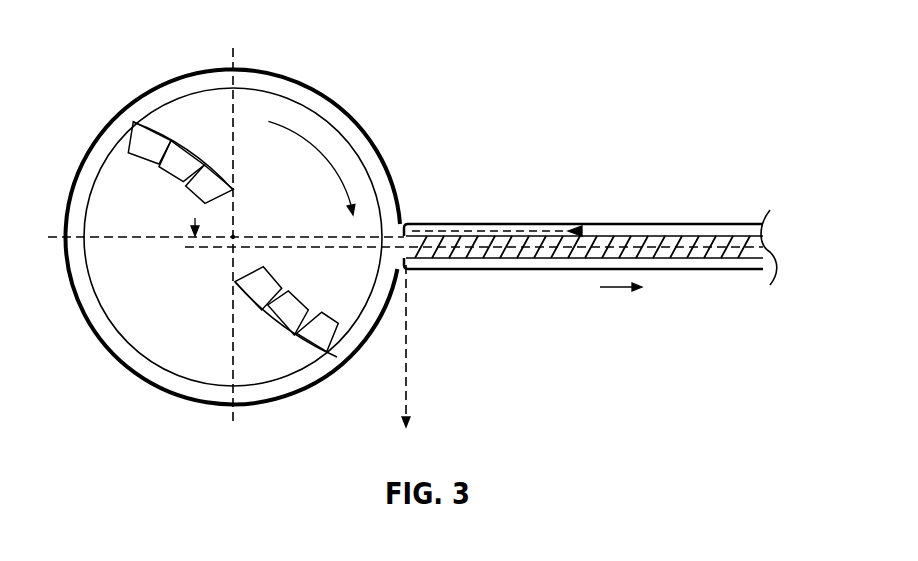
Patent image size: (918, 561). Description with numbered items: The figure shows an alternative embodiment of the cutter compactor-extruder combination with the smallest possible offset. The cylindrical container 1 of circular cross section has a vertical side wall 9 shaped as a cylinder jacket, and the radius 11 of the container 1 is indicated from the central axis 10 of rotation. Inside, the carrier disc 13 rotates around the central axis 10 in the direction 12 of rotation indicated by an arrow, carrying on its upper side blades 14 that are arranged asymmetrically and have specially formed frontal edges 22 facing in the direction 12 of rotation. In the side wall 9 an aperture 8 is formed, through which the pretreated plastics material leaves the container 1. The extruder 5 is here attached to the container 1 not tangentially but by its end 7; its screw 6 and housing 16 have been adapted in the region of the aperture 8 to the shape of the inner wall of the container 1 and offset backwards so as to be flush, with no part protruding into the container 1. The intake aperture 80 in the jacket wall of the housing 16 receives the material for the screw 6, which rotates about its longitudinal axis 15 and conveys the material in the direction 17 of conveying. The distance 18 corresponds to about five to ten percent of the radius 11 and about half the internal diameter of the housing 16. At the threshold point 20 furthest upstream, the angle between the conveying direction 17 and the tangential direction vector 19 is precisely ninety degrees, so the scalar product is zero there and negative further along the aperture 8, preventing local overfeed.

The container 1 is at (112, 50).
The extruder 5 is at (590, 243).
The screw 6 is at (685, 270).
The end of the extruder 7 is at (430, 226).
The aperture 8 is at (381, 256).
The side wall 9 is at (256, 68).
The central axis of rotation 10 is at (236, 236).
The radius of the container 11 is at (279, 235).
The direction of rotation 12 is at (326, 152).
The carrier disc 13 is at (188, 112).
The blades 14 is at (143, 150).
The longitudinal axis 15 is at (215, 250).
The housing 16 is at (668, 232).
The direction of conveying 17 is at (490, 232).
The distance 18 is at (193, 254).
The direction vector 19 is at (407, 383).
The threshold point 20 is at (390, 241).
The frontal edges 22 is at (199, 152).
The intake aperture 80 is at (400, 272).